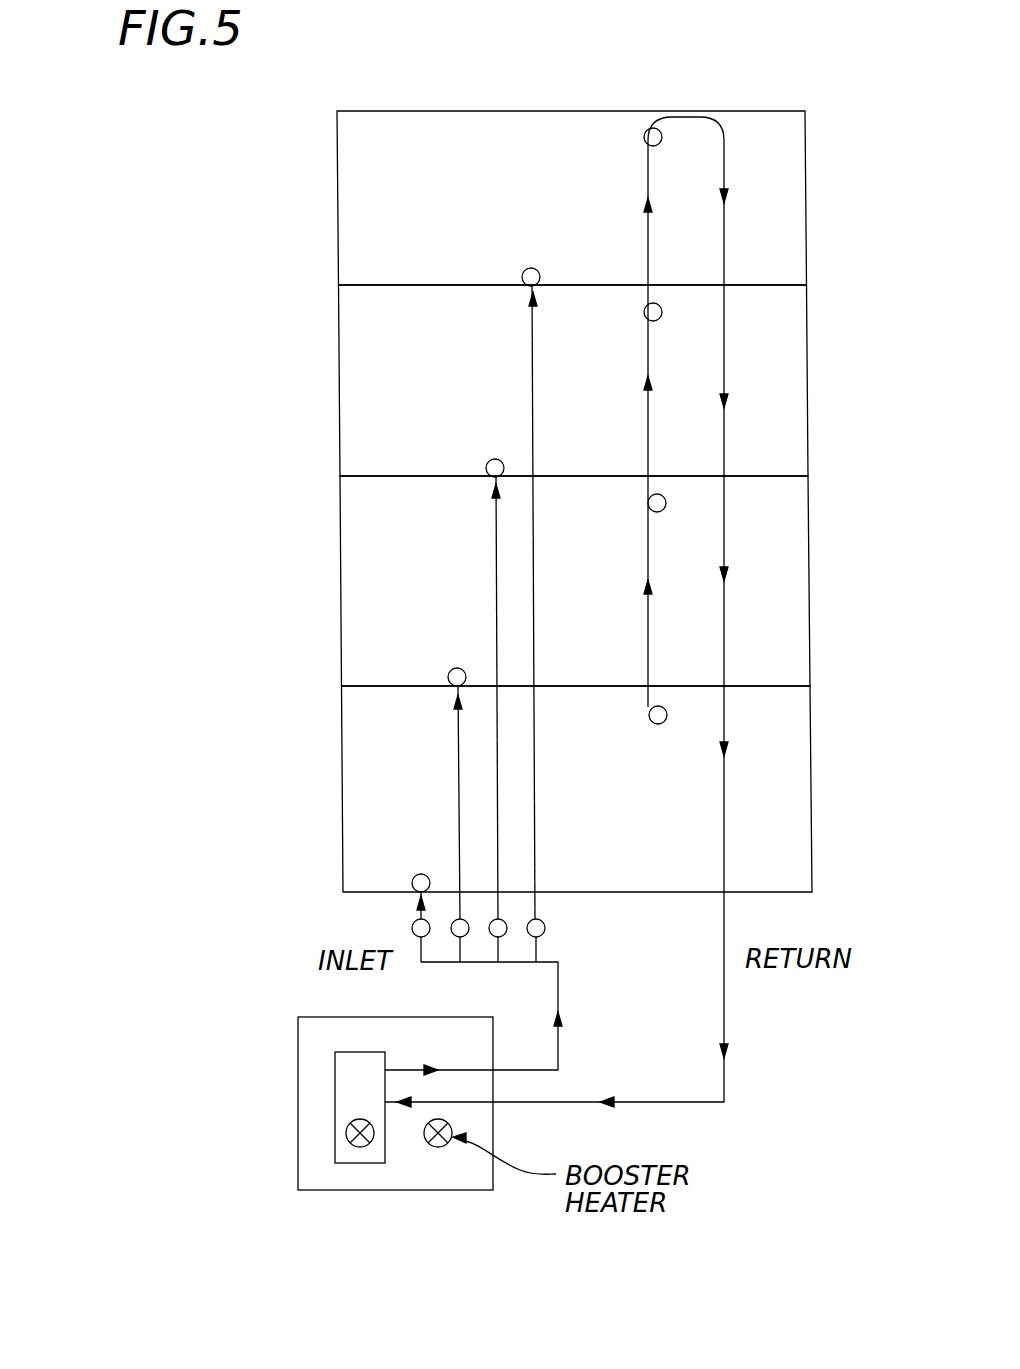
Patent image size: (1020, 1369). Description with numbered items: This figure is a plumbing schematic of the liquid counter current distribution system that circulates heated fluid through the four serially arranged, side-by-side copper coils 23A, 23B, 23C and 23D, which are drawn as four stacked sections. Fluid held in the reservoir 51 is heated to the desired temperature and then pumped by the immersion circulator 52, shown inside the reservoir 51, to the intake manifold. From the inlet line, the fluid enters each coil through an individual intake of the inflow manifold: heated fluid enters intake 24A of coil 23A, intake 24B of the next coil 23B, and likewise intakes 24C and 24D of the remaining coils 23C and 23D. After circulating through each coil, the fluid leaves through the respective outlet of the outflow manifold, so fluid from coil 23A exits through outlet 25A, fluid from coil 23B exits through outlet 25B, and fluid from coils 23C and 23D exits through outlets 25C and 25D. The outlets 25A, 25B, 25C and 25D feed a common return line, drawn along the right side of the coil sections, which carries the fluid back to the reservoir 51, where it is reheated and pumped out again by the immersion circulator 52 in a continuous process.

The coil 23A is at (342, 793).
The coil 23B is at (341, 581).
The coil 23C is at (339, 385).
The coil 23D is at (338, 198).
The intake of inflow manifold 24A is at (421, 873).
The intake of inflow manifold 24B is at (455, 667).
The intake of inflow manifold 24C is at (497, 458).
The intake of inflow manifold 24D is at (530, 268).
The outlet of outflow manifold 25A is at (661, 724).
The outlet of outflow manifold 25B is at (666, 506).
The outlet of outflow manifold 25C is at (662, 315).
The outlet of outflow manifold 25D is at (662, 140).
The reservoir 51 is at (347, 1196).
The immersion circulator 52 is at (326, 1087).